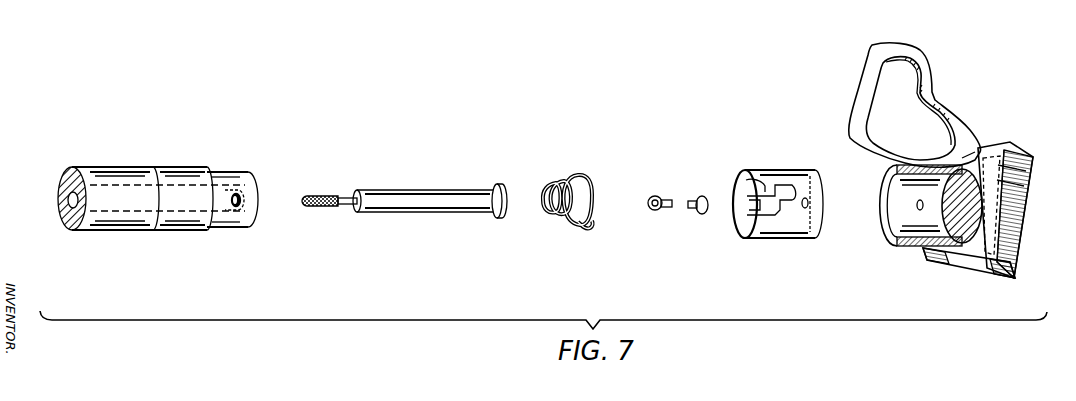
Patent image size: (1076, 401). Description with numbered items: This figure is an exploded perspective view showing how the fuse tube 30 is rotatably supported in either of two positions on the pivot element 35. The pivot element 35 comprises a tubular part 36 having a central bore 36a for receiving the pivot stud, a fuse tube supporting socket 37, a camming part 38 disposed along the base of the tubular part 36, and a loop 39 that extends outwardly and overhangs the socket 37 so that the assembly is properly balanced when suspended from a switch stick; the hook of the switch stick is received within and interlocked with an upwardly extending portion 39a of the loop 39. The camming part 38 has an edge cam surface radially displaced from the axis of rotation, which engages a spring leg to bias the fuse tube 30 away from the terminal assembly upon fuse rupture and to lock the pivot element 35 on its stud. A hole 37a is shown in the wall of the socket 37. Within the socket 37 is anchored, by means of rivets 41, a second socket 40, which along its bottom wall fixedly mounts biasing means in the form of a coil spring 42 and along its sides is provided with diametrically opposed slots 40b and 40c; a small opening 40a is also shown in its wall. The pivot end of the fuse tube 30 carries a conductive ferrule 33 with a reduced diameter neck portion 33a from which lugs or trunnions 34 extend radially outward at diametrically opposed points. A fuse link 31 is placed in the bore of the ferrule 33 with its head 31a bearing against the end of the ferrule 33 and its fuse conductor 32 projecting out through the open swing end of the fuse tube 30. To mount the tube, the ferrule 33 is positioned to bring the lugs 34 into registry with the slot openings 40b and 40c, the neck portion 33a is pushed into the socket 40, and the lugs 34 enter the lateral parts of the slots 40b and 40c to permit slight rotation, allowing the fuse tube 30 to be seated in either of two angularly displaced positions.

The fuse tube 30 is at (127, 138).
The conductive ferrule 33 is at (197, 138).
The reduced diameter neck portion 33a is at (267, 142).
The lugs or trunnions 34 is at (240, 202).
The fuse conductor 32 is at (318, 195).
The fuse link 31 is at (413, 190).
The head 31a is at (507, 155).
The coil spring 42 is at (585, 153).
The rivets 41 is at (702, 196).
The socket 40 is at (753, 200).
The sleeve hole 40a is at (790, 235).
The slot 40b is at (738, 220).
The slot 40c is at (757, 178).
The pivot element 35 is at (951, 162).
The loop 39 is at (920, 97).
The upwardly extending portion 39a is at (923, 67).
The fuse tube supporting socket 37 is at (910, 221).
The sleeve hole 37a is at (917, 205).
The tubular part 36 is at (1021, 210).
The central bore 36a is at (1010, 192).
The camming part 38 is at (982, 267).